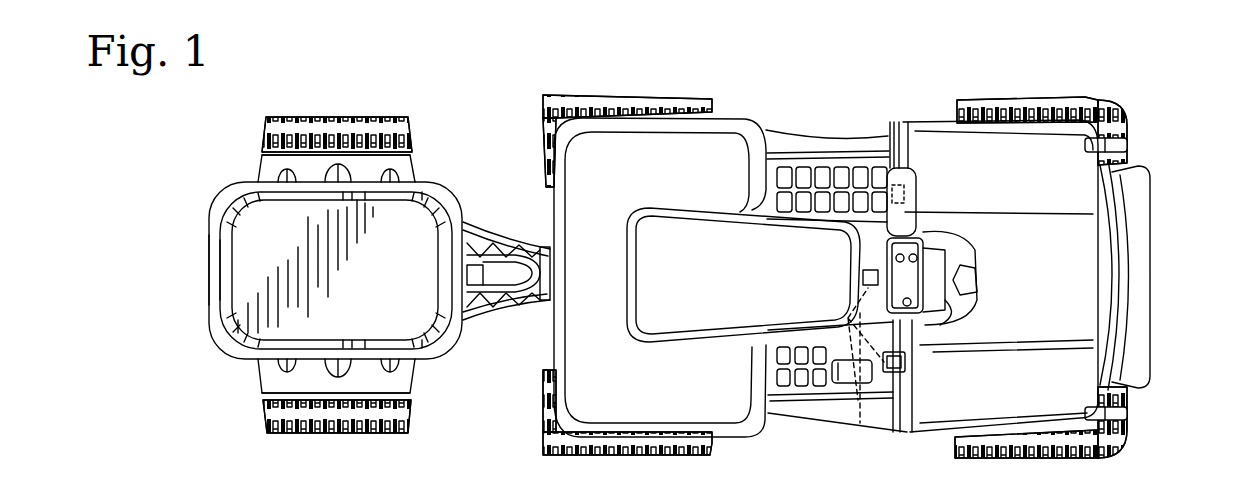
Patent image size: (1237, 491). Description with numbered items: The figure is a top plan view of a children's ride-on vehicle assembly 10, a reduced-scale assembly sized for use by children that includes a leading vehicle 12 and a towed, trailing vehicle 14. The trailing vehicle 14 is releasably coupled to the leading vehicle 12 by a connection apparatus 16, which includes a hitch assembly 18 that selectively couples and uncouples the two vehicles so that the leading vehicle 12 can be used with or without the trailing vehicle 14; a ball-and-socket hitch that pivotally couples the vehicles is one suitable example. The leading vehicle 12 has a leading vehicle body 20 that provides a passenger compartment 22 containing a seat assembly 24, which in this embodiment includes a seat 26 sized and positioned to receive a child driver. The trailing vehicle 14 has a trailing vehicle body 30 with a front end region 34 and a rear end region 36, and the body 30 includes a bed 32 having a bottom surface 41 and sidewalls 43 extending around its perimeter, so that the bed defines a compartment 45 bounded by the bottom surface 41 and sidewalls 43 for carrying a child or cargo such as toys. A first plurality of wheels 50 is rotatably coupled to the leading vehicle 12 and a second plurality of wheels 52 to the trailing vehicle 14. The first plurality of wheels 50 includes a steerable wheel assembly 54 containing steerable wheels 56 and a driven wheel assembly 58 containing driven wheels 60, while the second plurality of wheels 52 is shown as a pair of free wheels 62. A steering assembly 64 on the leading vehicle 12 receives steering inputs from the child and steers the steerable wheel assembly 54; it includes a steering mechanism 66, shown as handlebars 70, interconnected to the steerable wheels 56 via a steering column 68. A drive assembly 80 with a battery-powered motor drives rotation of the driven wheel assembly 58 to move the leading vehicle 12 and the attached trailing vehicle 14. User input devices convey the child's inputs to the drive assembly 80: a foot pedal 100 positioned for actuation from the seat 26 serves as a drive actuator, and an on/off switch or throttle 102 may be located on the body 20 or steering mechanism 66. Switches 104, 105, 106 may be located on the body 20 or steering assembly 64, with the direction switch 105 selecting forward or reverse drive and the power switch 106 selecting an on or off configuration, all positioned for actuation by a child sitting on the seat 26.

The children's ride-on vehicle assembly 10 is at (455, 92).
The leading vehicle 12 is at (853, 92).
The trailing vehicle 14 is at (210, 156).
The connection apparatus 16 is at (500, 180).
The hitch assembly 18 is at (540, 311).
The leading vehicle body 20 is at (742, 115).
The passenger compartment 22 is at (756, 178).
The seat assembly 24 is at (778, 205).
The seat 26 is at (700, 299).
The trailing vehicle body 30 is at (190, 272).
The bed 32 is at (206, 225).
The front end region 34 is at (476, 208).
The rear end region 36 is at (190, 307).
The bottom surface 41 is at (352, 287).
The sidewalls 43 is at (440, 287).
The compartment 45 is at (267, 330).
The first plurality of wheels 50 is at (730, 452).
The second plurality of wheels 52 is at (282, 106).
The steerable wheel assembly 54 is at (1075, 98).
The steerable wheel 56 is at (1122, 135).
The driven wheel assembly 58 is at (558, 97).
The driven wheel 60 is at (665, 98).
The free wheels 62 is at (352, 117).
The steering assembly 64 is at (968, 243).
The steering mechanism 66 is at (886, 250).
The steering column 68 is at (980, 283).
The handlebars 70 is at (940, 317).
The drive assembly 80 is at (866, 133).
The foot pedal 100 is at (842, 378).
The on/off switch or throttle 102 is at (902, 362).
The switch 104 is at (862, 384).
The direction switch 105 is at (918, 203).
The power switch 106 is at (848, 316).